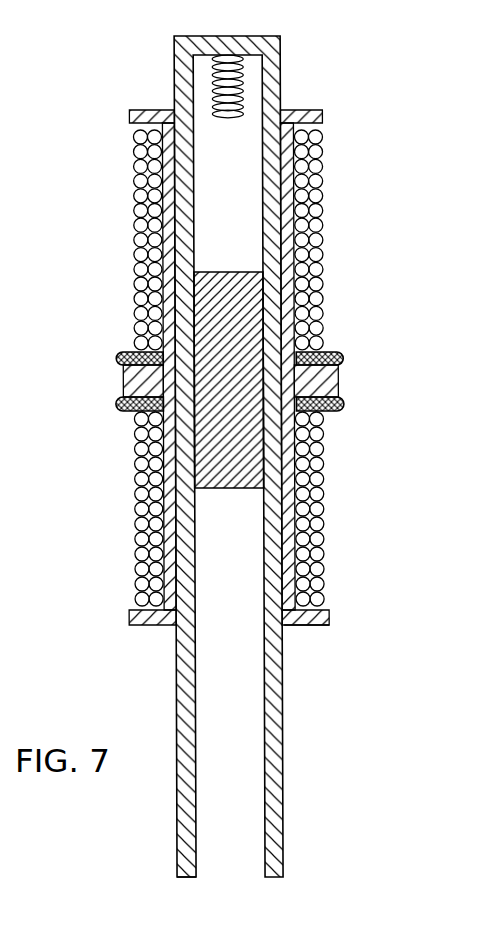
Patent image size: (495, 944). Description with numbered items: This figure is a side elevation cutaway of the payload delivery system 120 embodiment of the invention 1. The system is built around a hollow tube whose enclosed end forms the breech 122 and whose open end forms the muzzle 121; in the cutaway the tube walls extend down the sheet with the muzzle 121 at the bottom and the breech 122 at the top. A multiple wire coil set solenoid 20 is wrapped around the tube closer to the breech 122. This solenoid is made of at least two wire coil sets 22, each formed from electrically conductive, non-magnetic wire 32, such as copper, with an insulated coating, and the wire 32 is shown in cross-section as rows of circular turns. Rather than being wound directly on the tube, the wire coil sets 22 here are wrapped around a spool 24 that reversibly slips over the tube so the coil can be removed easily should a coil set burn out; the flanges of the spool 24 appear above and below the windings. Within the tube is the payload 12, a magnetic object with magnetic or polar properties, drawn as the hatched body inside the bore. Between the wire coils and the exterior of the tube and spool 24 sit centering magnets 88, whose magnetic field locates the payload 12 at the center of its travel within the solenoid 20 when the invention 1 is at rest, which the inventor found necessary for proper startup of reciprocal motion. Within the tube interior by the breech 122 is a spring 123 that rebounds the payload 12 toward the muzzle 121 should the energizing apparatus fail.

The invention 1 is at (392, 213).
The payload 12 is at (235, 282).
The multiple wire coil set solenoid 20 is at (315, 626).
The wire coil set 22 is at (135, 238).
The spool 24 is at (323, 116).
The wire 32 is at (322, 260).
The centering magnets 88 is at (116, 357).
The payload delivery system 120 is at (340, 182).
The muzzle 121 is at (174, 76).
The breech 122 is at (223, 867).
The spring 123 is at (242, 80).